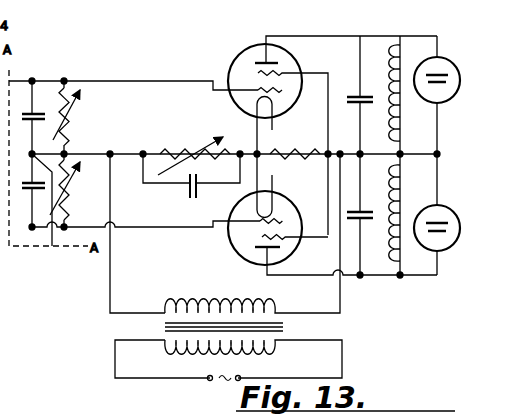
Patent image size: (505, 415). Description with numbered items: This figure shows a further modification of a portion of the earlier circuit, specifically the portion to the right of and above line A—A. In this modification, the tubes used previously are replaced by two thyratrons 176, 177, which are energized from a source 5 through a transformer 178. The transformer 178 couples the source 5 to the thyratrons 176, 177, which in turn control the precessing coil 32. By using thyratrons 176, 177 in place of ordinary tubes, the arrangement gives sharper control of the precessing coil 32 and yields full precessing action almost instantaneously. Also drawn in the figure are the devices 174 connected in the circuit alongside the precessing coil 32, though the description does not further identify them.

The thyratron 176 is at (247, 47).
The thyratron 177 is at (232, 240).
The electrical lamp / discharge device 174 is at (440, 57).
The precessing coil 32 is at (390, 86).
The transformer 178 is at (288, 324).
The source 5 is at (237, 366).